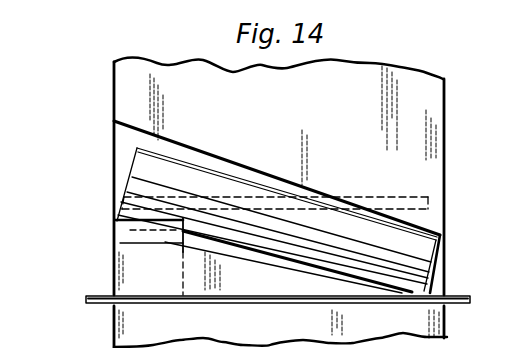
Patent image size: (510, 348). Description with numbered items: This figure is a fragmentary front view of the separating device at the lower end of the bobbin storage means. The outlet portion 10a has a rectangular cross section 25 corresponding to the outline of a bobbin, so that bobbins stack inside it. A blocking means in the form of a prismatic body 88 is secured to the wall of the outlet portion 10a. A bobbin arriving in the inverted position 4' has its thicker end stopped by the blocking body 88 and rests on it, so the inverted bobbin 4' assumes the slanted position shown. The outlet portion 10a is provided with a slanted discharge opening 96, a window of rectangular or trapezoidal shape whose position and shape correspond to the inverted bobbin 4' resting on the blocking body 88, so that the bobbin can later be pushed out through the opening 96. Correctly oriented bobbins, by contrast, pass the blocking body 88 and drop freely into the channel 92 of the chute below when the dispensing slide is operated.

The rectangular cross section 25 is at (427, 114).
The outlet portion 10a is at (446, 175).
The channel 92 is at (413, 327).
The slanted discharge opening 96 is at (205, 150).
The inverted bobbin 4' is at (275, 168).
The prismatic blocking body 88 is at (150, 232).